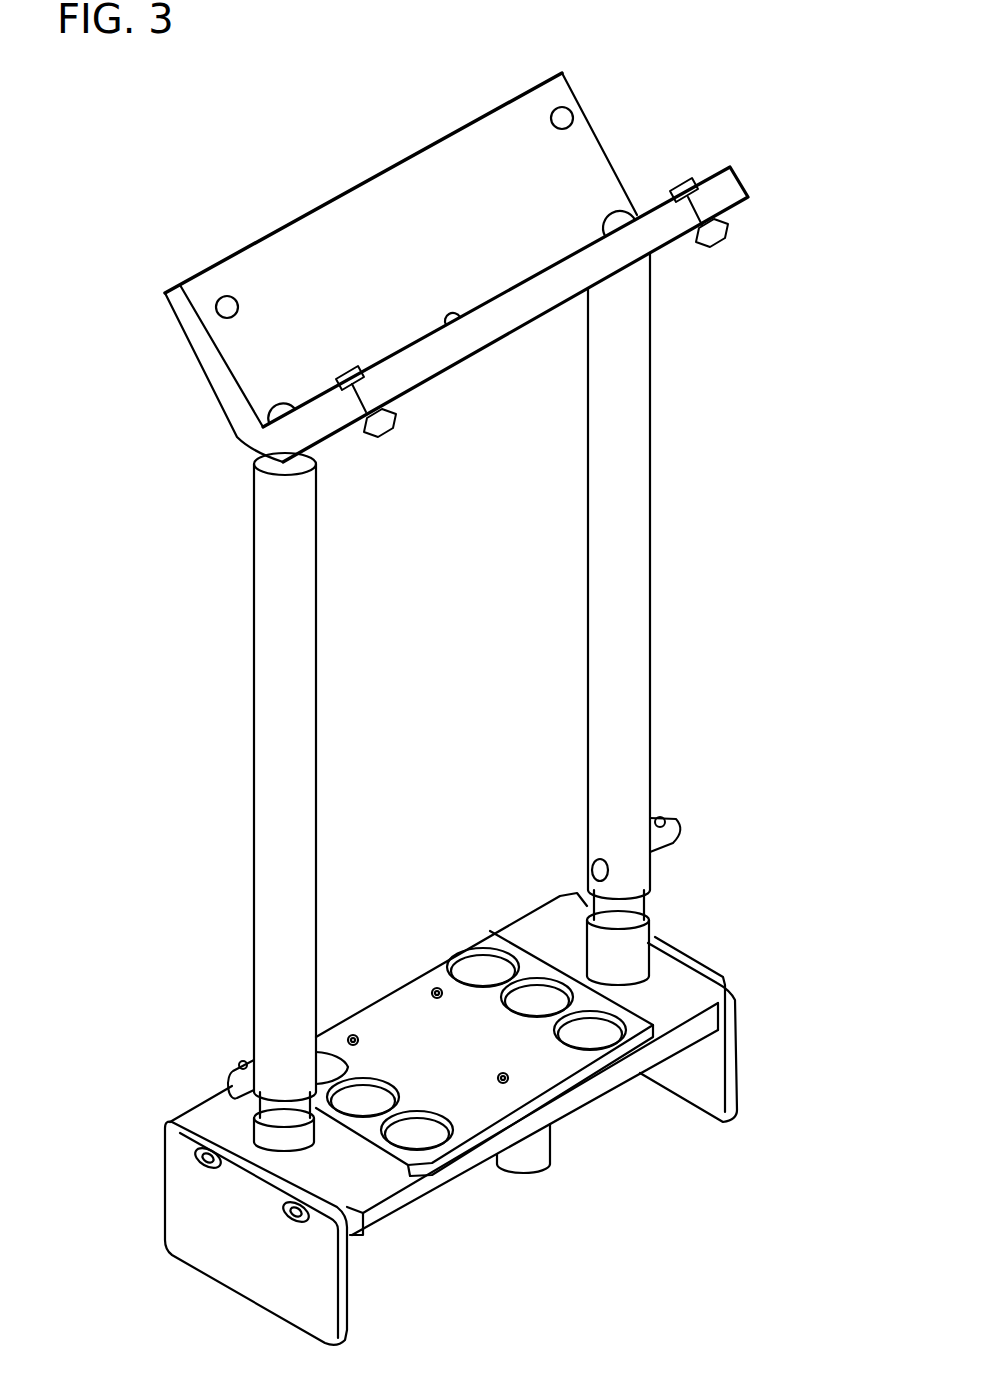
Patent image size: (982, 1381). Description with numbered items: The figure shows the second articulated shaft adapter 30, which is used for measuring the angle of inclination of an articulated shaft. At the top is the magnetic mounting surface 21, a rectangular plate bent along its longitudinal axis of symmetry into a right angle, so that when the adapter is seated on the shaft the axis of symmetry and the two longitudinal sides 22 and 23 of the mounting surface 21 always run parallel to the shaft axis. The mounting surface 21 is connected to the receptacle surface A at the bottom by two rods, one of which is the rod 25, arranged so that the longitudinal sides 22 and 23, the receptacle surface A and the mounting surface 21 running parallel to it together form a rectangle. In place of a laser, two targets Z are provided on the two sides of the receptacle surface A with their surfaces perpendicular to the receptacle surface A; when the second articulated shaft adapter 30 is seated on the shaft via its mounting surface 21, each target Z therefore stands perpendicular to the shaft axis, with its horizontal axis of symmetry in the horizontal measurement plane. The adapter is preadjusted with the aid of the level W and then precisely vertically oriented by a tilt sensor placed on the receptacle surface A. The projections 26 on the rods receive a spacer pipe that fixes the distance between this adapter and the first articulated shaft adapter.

The magnetic mounting surface 21 is at (282, 345).
The longitudinal side of the mounting surface 22 is at (327, 203).
The longitudinal side of the mounting surface 23 is at (683, 193).
The rod 25 is at (623, 580).
The projections 26 is at (667, 832).
The second articulated shaft adapter 30 is at (752, 356).
The receptacle surface A is at (400, 1003).
The level W is at (517, 1152).
The target Z is at (703, 1070).